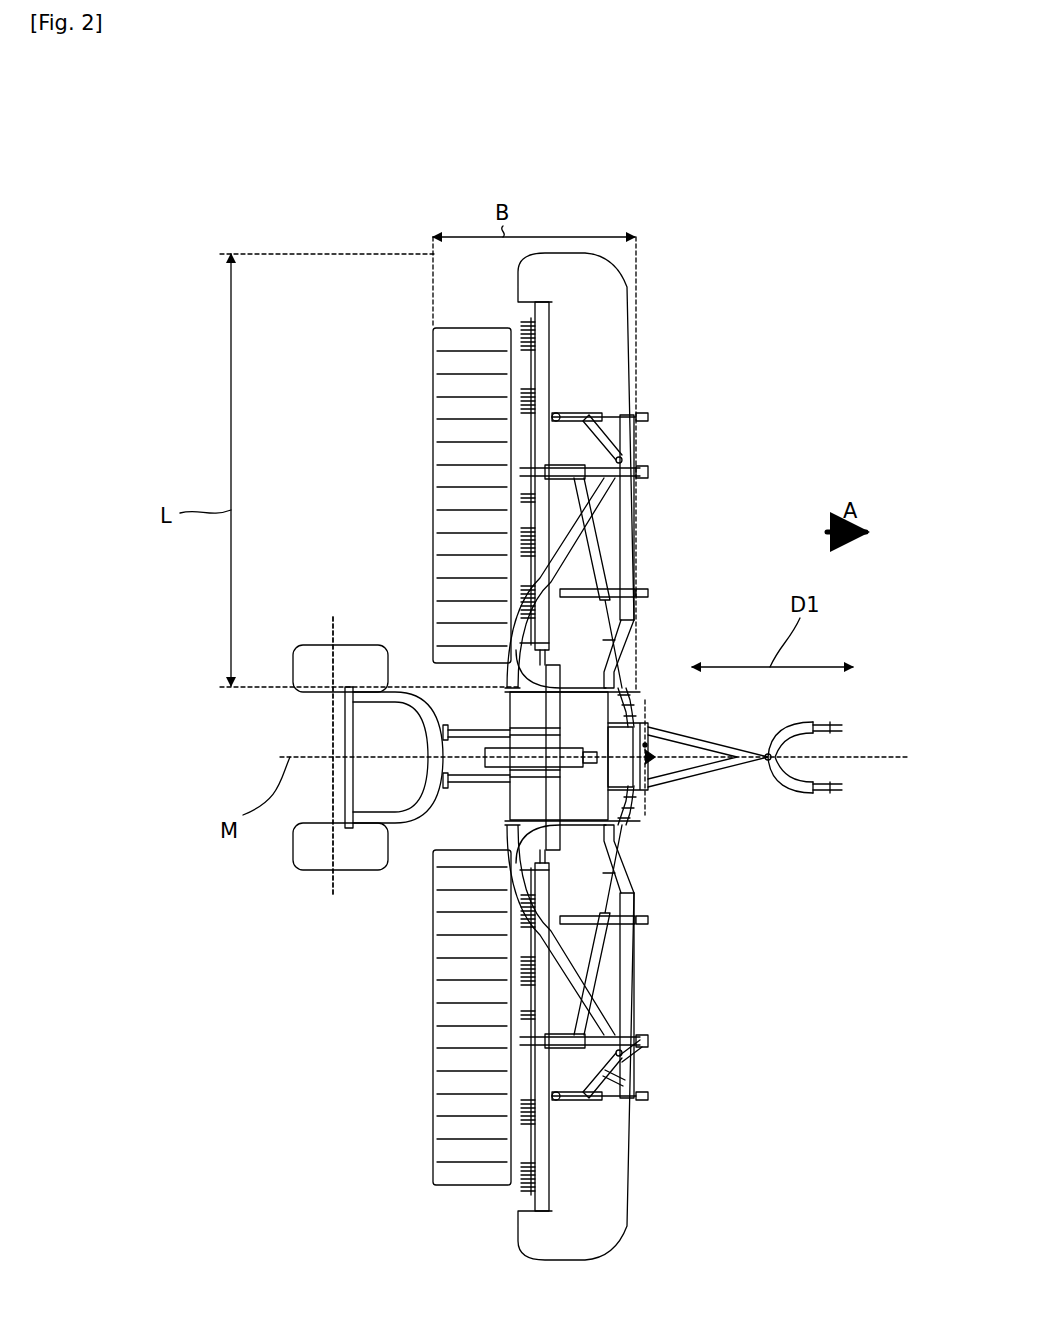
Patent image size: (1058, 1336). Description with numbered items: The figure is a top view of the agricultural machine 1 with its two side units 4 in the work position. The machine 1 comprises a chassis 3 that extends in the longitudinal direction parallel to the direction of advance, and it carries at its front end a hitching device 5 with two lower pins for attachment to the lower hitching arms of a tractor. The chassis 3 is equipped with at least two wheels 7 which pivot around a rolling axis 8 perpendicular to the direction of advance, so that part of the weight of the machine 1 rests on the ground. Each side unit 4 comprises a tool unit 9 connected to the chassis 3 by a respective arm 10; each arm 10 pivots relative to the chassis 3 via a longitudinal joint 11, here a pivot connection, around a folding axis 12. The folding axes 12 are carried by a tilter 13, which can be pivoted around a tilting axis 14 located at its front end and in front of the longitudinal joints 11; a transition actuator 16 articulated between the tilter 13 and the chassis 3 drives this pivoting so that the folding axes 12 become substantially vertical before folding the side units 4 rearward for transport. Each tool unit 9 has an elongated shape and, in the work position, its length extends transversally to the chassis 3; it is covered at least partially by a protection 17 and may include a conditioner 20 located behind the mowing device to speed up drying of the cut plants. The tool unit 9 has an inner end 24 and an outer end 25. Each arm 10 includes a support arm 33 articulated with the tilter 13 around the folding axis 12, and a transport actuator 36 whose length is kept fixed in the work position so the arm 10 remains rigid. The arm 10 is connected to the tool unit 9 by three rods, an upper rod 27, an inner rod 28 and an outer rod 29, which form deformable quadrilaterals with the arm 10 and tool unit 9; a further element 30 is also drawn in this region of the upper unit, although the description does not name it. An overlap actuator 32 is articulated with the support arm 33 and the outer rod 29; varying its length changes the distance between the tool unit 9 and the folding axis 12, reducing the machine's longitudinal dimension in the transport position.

The agricultural machine 1 is at (870, 305).
The chassis 3 is at (725, 750).
The side units 4 is at (338, 490).
The hitching device 5 is at (825, 803).
The wheels 7 is at (318, 842).
The rolling axis 8 is at (333, 880).
The tool unit 9 is at (650, 328).
The arm 10 is at (646, 987).
The longitudinal joint 11 is at (622, 686).
The folding axis 12 is at (526, 812).
The tilter 13 is at (579, 756).
The tilting axis 14 is at (645, 745).
The transition actuator 16 is at (506, 762).
The protection 17 is at (600, 347).
The conditioner 20 is at (509, 1202).
The inner end 24 is at (636, 846).
The outer end 25 is at (630, 1251).
The upper rod 27 is at (612, 1047).
The inner rod 28 is at (604, 922).
The outer rod 29 is at (568, 1097).
The hydraulic cylinder 30 is at (565, 470).
The overlap actuator 32 is at (610, 1073).
The support arm 33 is at (625, 1068).
The transport actuator 36 is at (555, 583).